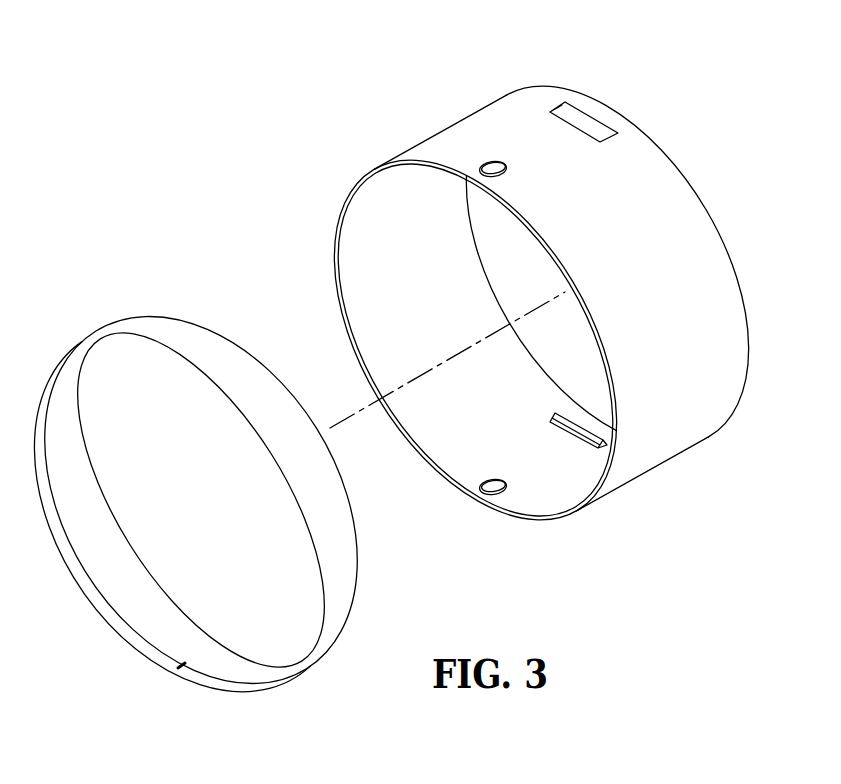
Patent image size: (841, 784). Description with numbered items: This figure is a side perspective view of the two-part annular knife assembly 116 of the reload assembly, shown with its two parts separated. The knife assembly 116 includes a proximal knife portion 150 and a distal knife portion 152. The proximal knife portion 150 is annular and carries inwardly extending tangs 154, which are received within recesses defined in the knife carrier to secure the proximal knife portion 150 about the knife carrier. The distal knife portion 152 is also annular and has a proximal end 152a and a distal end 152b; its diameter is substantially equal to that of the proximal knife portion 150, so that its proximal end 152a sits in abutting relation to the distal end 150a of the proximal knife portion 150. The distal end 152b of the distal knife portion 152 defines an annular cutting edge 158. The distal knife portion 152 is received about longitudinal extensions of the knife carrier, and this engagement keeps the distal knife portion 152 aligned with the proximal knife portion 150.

The annular knife assembly 116 is at (194, 257).
The proximal knife portion 150 is at (478, 103).
The distal end of the proximal knife portion 150a is at (447, 482).
The distal knife portion 152 is at (107, 318).
The proximal end of the distal knife portion 152a is at (225, 365).
The distal end of the distal knife portion 152b is at (113, 620).
The inwardly extending tangs 154 is at (580, 118).
The annular cutting edge 158 is at (193, 683).